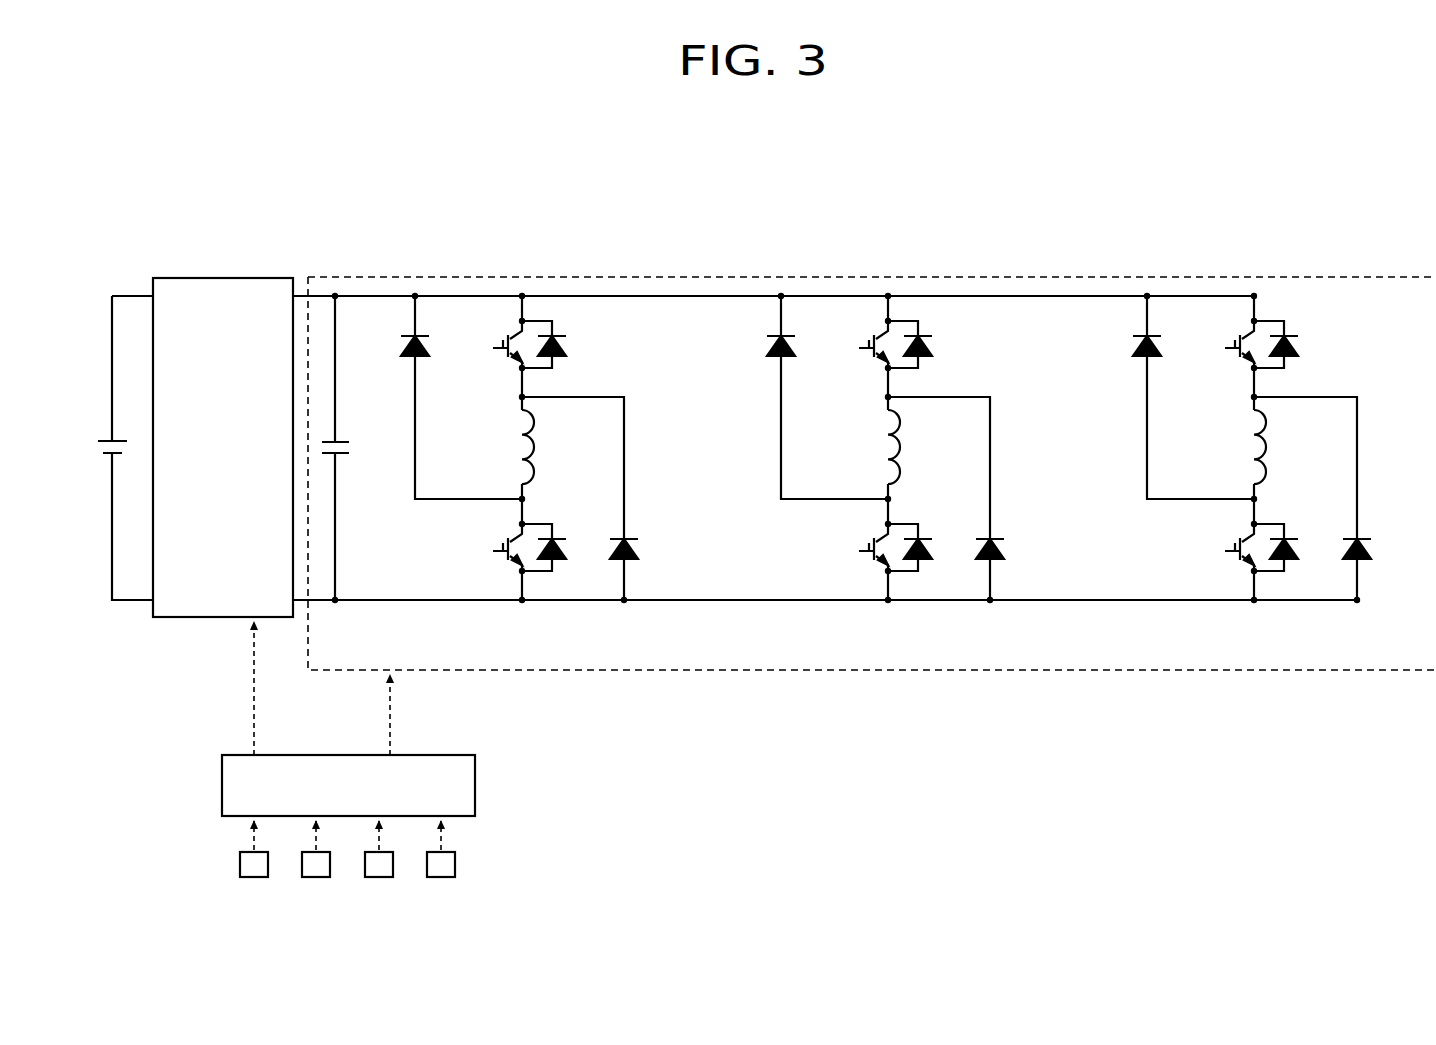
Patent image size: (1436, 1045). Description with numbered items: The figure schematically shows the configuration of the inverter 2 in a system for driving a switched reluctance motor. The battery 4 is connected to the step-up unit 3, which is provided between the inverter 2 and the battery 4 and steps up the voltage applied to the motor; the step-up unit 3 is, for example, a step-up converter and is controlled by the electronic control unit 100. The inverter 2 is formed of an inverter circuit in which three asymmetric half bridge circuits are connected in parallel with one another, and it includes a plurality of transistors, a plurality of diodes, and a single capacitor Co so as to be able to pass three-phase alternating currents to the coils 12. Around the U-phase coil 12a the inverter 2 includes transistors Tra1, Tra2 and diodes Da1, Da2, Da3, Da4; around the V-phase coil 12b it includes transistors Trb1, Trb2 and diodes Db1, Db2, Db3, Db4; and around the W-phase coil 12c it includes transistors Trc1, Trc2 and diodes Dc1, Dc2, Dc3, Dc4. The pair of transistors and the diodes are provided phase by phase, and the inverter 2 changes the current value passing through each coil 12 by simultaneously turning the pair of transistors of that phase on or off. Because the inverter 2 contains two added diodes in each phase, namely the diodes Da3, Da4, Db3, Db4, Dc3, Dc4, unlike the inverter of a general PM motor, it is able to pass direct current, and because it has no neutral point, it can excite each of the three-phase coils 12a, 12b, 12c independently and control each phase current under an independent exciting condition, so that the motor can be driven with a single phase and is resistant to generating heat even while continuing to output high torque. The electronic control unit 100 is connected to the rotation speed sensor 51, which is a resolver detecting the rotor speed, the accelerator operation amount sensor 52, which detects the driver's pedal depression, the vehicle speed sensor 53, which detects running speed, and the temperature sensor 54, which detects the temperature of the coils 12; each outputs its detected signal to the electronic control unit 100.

The inverter 2 is at (1398, 262).
The step-up unit 3 is at (245, 277).
The battery 4 is at (107, 434).
The capacitor Co is at (343, 461).
The coils 12 is at (926, 466).
The U-phase coil 12a is at (534, 447).
The V-phase coil 12b is at (900, 447).
The W-phase coil 12c is at (1266, 447).
The transistor Tra1 is at (508, 318).
The transistor Tra2 is at (495, 566).
The transistor Trb1 is at (874, 318).
The transistor Trb2 is at (861, 566).
The transistor Trc1 is at (1240, 318).
The transistor Trc2 is at (1227, 566).
The diode Da1 is at (560, 328).
The diode Da2 is at (561, 570).
The diode Da3 is at (403, 330).
The diode Da4 is at (629, 570).
The diode Db1 is at (926, 328).
The diode Db2 is at (927, 570).
The diode Db3 is at (769, 330).
The diode Db4 is at (995, 570).
The diode Dc1 is at (1292, 328).
The diode Dc2 is at (1293, 570).
The diode Dc3 is at (1135, 330).
The diode Dc4 is at (1362, 570).
The electronic control unit 100 is at (478, 786).
The rotation speed sensor 51 is at (251, 878).
The accelerator operation amount sensor 52 is at (313, 878).
The vehicle speed sensor 53 is at (376, 878).
The temperature sensor 54 is at (438, 878).